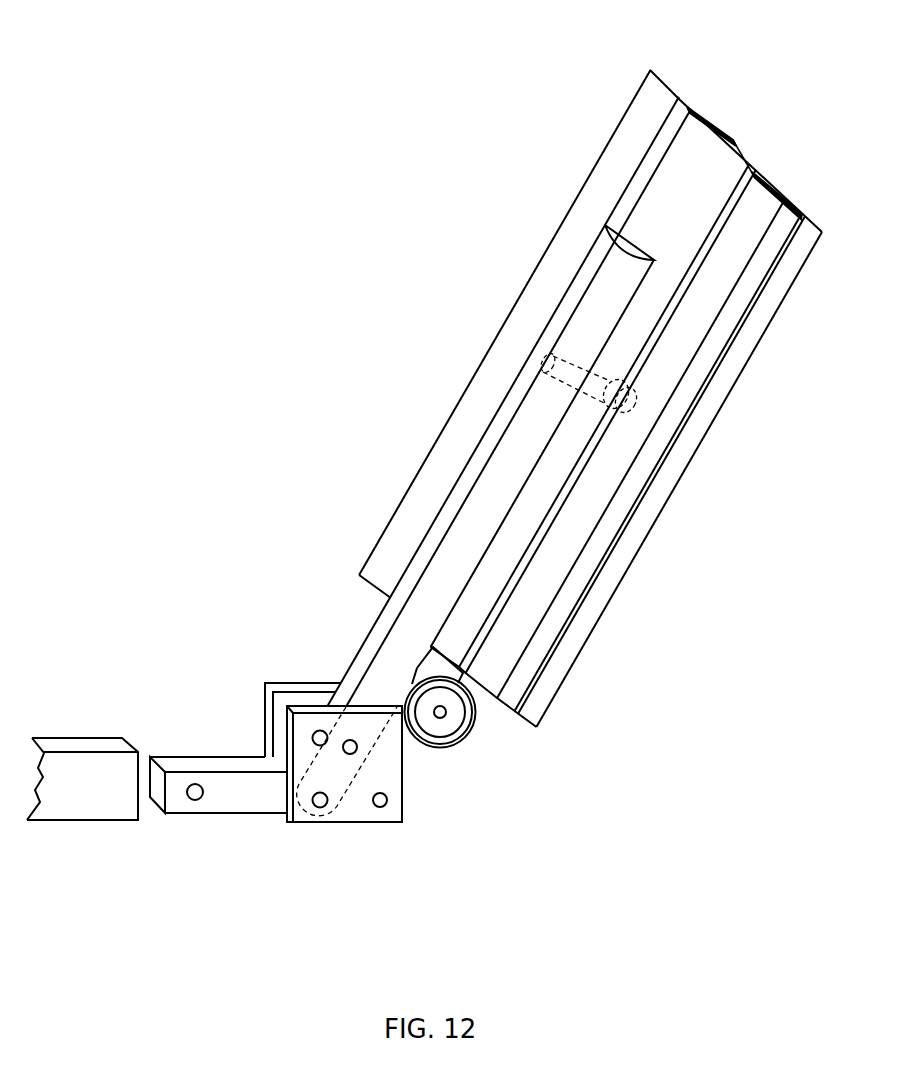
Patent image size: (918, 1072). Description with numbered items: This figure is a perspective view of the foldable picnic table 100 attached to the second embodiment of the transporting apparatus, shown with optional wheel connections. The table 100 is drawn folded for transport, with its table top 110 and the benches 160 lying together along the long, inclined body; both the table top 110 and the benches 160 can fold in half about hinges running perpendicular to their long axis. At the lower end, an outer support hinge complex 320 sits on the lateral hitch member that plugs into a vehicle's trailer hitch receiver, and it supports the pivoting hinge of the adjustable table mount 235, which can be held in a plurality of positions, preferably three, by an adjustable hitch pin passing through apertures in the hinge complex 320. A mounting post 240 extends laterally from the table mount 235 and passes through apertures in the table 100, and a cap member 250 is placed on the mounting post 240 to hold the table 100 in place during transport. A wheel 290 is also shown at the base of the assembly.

The foldable picnic table 100 is at (577, 387).
The table top 110 is at (707, 160).
The benches 160 is at (657, 90).
The adjustable table mount 235 is at (573, 300).
The mounting post 240 is at (588, 388).
The cap member 250 is at (627, 400).
The wheel 290 is at (465, 726).
The outer support hinge complex 320 is at (280, 685).